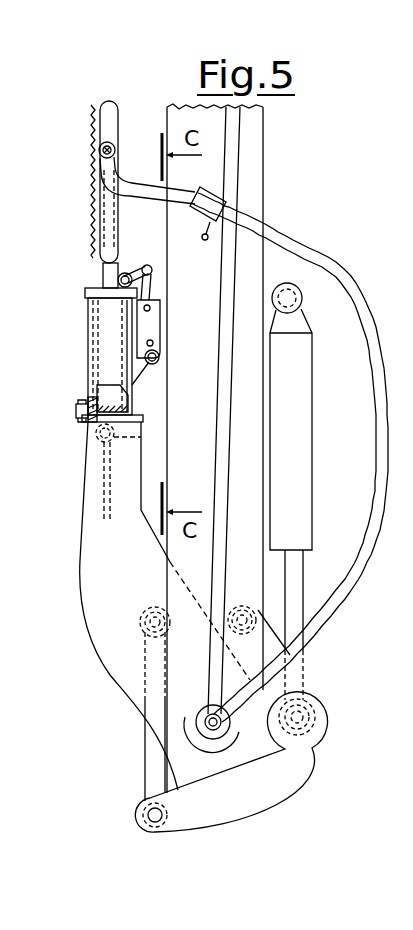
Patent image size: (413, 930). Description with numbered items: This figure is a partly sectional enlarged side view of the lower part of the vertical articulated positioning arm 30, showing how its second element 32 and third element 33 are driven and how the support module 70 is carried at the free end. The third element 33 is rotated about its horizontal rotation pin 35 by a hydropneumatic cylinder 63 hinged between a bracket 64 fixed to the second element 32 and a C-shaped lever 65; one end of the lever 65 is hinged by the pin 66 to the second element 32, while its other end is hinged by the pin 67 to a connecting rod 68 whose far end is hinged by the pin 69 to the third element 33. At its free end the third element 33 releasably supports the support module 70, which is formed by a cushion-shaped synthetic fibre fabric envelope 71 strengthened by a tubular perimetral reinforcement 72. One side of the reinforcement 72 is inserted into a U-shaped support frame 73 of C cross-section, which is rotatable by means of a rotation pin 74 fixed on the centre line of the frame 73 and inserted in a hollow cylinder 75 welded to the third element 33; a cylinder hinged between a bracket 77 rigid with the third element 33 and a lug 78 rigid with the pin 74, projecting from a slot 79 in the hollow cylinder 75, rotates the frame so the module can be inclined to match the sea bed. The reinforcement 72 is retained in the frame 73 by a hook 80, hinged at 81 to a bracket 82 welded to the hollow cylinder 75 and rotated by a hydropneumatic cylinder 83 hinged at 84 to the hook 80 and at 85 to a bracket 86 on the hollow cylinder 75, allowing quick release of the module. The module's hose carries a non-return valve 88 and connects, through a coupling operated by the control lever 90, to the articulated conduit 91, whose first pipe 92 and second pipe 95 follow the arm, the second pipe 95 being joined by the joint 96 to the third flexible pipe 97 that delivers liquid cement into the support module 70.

The vertical articulated positioning arm 30 is at (271, 226).
The second element 32 is at (262, 186).
The third element 33 is at (86, 548).
The horizontal rotation pin 35 is at (232, 733).
The hydropneumatic cylinder 63 is at (303, 473).
The bracket 64 is at (283, 262).
The C-shaped lever 65 is at (283, 797).
The pin 66 is at (255, 614).
The pin 67 is at (138, 817).
The connecting rod 68 is at (146, 753).
The pin 69 is at (141, 630).
The support module 70 is at (88, 161).
The synthetic fibre fabric envelope 71 is at (92, 214).
The tubular perimetral reinforcement 72 is at (110, 116).
The support frame 73 is at (123, 221).
The rotation pin 74 is at (102, 276).
The hollow cylinder 75 is at (90, 346).
The bracket 77 is at (88, 447).
The lug 78 is at (76, 405).
The slot 79 is at (88, 396).
The hook 80 is at (201, 209).
The hinge 81 is at (132, 281).
The bracket 82 is at (86, 290).
The hydropneumatic cylinder 83 is at (160, 326).
The hinge 84 is at (150, 277).
The hinge 85 is at (159, 357).
The bracket 86 is at (131, 373).
The non-return valve 88 is at (115, 152).
The control lever 90 is at (204, 240).
The articulated conduit 91 is at (214, 430).
The first pipe 92 is at (22, 379).
The second pipe 95 is at (226, 392).
The joint 96 is at (212, 731).
The third flexible pipe 97 is at (348, 597).